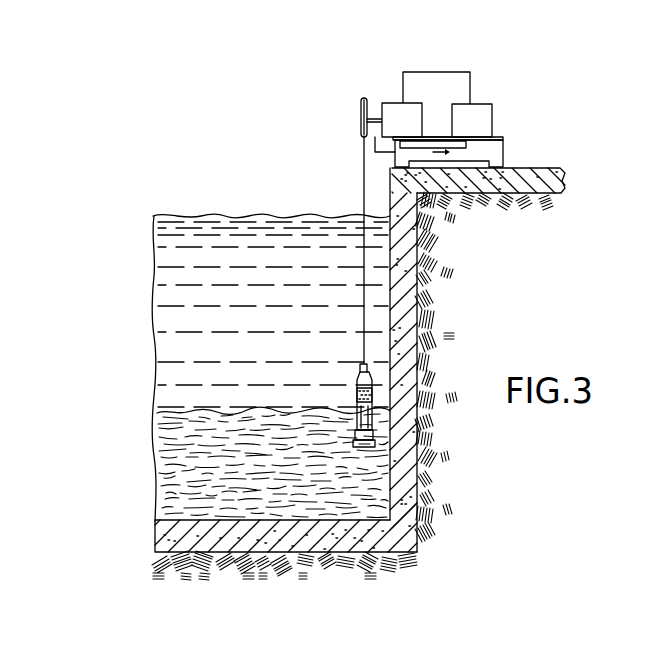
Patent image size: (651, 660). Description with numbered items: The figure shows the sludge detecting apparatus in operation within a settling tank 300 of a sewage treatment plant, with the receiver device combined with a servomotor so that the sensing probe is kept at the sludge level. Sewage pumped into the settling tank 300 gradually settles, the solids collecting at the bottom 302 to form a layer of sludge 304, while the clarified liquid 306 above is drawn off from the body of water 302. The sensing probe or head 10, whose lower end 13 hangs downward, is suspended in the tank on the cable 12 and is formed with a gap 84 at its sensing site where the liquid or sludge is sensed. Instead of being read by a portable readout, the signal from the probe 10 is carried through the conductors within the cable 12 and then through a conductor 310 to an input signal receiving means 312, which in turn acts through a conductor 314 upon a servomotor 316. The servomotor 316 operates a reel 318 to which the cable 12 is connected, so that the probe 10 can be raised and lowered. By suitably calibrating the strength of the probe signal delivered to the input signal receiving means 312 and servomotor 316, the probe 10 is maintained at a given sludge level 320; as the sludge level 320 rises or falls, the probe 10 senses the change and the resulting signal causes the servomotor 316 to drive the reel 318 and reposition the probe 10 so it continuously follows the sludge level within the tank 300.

The sensing probe or head 10 is at (311, 390).
The cable 12 is at (363, 205).
The lower end 13 is at (646, 8).
The gap 84 is at (347, 408).
The settling tank 300 is at (420, 293).
The bottom / body of water 302 is at (264, 238).
The sludge 304 is at (157, 483).
The clarified liquid 306 is at (198, 278).
The conductor 310 is at (463, 152).
The input signal receiving means 312 is at (483, 118).
The conductor 314 is at (450, 72).
The servomotor 316 is at (406, 94).
The reel 318 is at (360, 98).
The sludge level 320 is at (197, 420).